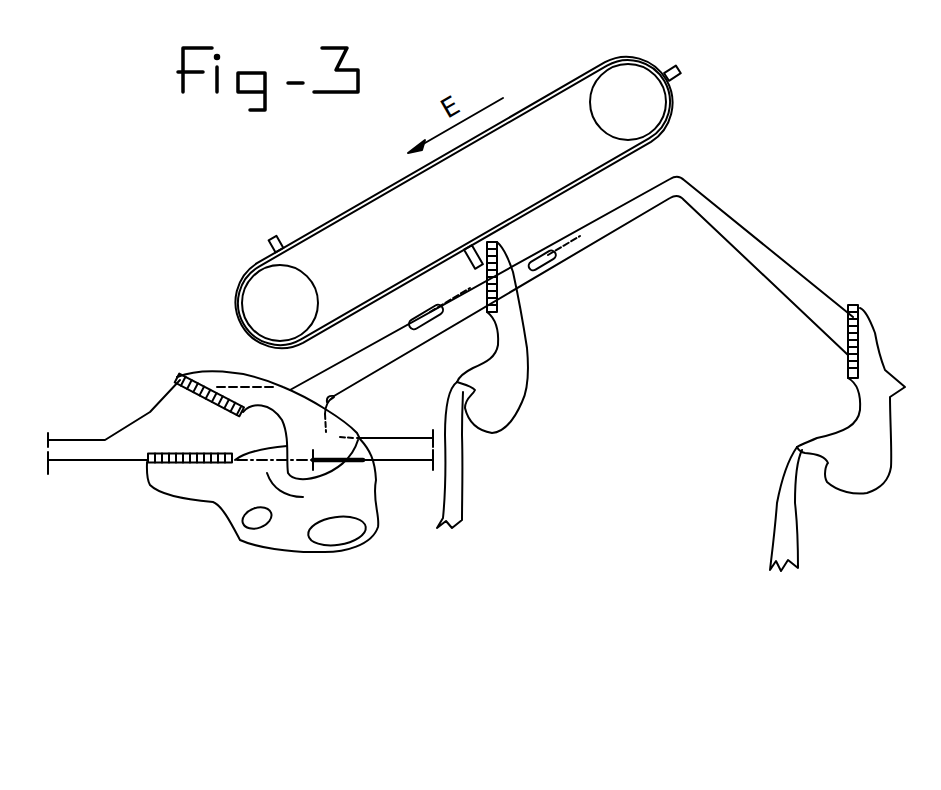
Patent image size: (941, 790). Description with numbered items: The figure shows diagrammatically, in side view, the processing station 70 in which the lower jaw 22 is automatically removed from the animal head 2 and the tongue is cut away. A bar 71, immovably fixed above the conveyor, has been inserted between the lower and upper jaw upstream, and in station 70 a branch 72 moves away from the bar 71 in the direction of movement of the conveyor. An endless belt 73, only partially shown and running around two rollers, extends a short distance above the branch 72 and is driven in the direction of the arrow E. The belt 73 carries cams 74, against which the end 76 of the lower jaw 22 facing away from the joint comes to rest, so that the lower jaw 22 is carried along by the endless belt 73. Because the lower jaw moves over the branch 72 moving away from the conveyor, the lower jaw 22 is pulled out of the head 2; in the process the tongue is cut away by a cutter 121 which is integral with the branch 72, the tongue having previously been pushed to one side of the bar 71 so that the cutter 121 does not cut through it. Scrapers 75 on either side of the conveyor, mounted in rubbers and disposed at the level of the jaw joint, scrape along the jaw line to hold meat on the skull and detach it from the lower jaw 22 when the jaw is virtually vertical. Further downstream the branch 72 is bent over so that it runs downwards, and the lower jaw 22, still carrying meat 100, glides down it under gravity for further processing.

The head 2 is at (237, 530).
The lower jaw 22 is at (350, 418).
The station 70 is at (201, 242).
The bar 71 is at (80, 433).
The branch 72 is at (599, 222).
The endless belt 73 is at (246, 289).
The cams 74 is at (272, 247).
The scrapers 75 is at (377, 497).
The end of the lower jaw 76 is at (180, 370).
The meat 100 is at (453, 488).
The cutter 121 is at (438, 312).